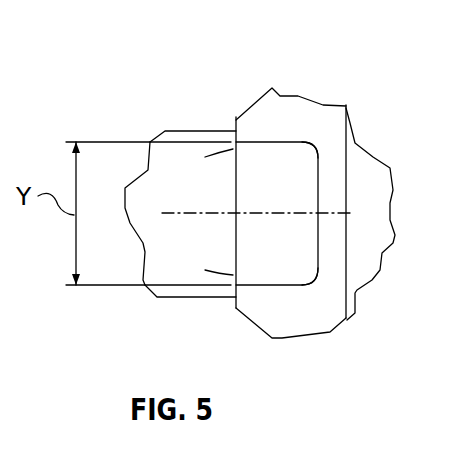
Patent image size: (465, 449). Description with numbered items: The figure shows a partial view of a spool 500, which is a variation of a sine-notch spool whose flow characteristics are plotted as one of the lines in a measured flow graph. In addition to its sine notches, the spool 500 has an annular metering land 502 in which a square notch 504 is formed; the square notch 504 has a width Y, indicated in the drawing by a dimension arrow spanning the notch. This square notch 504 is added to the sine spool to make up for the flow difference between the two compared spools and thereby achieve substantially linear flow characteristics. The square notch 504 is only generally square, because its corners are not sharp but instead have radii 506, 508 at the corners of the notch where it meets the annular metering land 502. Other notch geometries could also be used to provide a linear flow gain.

The spool 500 is at (180, 68).
The annular metering land 502 is at (292, 96).
The square notch 504 is at (282, 155).
The radius 506 is at (318, 138).
The radius 508 is at (316, 282).